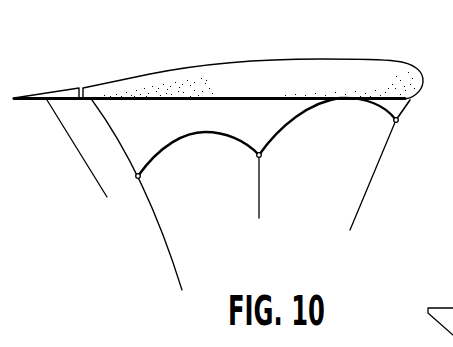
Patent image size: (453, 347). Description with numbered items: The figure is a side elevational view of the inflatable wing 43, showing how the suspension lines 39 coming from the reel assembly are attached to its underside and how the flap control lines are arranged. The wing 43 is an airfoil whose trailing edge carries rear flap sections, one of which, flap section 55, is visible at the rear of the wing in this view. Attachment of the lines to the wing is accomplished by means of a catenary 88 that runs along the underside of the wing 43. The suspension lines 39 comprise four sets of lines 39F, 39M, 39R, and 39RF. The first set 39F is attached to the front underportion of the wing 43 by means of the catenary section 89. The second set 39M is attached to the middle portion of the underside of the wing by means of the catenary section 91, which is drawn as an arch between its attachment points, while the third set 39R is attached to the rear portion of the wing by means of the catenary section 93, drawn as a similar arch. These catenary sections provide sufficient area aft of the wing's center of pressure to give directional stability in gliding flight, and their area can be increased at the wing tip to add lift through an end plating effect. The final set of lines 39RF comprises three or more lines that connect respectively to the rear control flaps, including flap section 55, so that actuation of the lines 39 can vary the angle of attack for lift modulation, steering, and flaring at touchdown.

The wing 43 is at (282, 82).
The flap section 55 is at (67, 94).
The catenary 88 is at (224, 108).
The catenary section 89 is at (400, 105).
The catenary section 93 is at (147, 138).
The catenary section 91 is at (275, 128).
The set of suspension lines 39RF is at (80, 156).
The set of suspension lines 39R is at (153, 212).
The set of suspension lines 39M is at (262, 188).
The set of suspension lines 39F is at (370, 185).
The suspension lines 39 is at (260, 253).